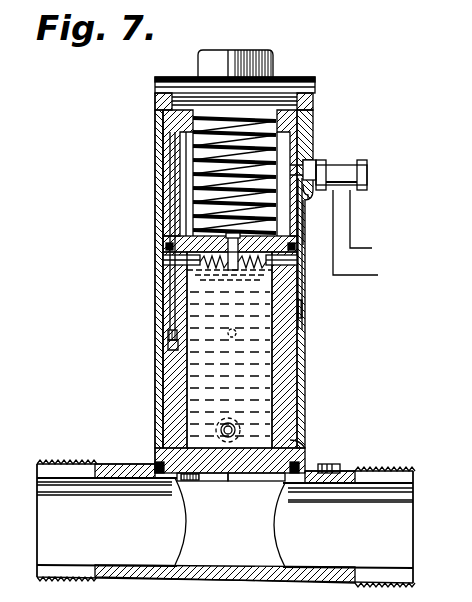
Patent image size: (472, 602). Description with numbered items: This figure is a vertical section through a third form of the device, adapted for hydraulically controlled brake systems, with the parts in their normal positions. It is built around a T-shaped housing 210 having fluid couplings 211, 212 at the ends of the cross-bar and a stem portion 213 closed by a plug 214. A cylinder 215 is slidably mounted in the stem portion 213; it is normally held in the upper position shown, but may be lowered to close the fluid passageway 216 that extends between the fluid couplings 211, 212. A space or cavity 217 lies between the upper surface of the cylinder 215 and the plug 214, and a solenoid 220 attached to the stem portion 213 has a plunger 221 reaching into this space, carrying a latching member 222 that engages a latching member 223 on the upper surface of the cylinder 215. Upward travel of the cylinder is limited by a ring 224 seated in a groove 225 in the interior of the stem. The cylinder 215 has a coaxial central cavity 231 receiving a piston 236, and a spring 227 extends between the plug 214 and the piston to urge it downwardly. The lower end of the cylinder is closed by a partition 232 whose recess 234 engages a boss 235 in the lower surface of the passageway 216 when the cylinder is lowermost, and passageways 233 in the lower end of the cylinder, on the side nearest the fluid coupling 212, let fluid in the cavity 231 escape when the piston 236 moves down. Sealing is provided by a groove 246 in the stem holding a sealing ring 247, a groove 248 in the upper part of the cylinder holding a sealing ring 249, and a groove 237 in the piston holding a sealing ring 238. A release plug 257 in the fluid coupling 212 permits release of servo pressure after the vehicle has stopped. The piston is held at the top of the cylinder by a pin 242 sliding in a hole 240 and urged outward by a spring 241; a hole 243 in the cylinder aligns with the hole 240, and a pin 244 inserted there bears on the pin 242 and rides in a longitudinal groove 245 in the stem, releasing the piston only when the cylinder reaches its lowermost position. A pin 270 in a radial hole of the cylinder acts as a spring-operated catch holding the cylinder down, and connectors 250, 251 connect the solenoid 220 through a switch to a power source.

The T-shaped housing 210 is at (315, 414).
The fluid coupling 211 is at (85, 462).
The fluid coupling 212 is at (404, 471).
The stem portion 213 is at (160, 402).
The plug 214 is at (218, 50).
The cylinder 215 is at (286, 373).
The fluid passageway 216 is at (200, 536).
The space or cavity 217 is at (200, 172).
The solenoid 220 is at (350, 170).
The plunger 221 is at (318, 163).
The latching member 222 is at (318, 199).
The latching member 223 is at (318, 213).
The ring 224 is at (192, 240).
The groove 225 is at (228, 238).
The spring 227 is at (198, 150).
The central cavity 231 is at (187, 379).
The partition 232 is at (218, 482).
The passageways 233 is at (297, 446).
The recess 234 is at (258, 482).
The boss 235 is at (272, 562).
The piston 236 is at (294, 285).
The groove 237 is at (205, 213).
The sealing ring 238 is at (318, 227).
The hole 240 is at (172, 322).
The spring 241 is at (176, 338).
The pin 242 is at (185, 284).
The hole 243 is at (182, 270).
The pin 244 is at (185, 260).
The groove 245 is at (180, 345).
The groove 246 is at (160, 462).
The sealing ring 247 is at (300, 462).
The groove 248 is at (200, 252).
The sealing ring 249 is at (318, 241).
The connector 250 is at (374, 250).
The connector 251 is at (380, 276).
The release plug 257 is at (342, 468).
The pin 270 is at (230, 424).